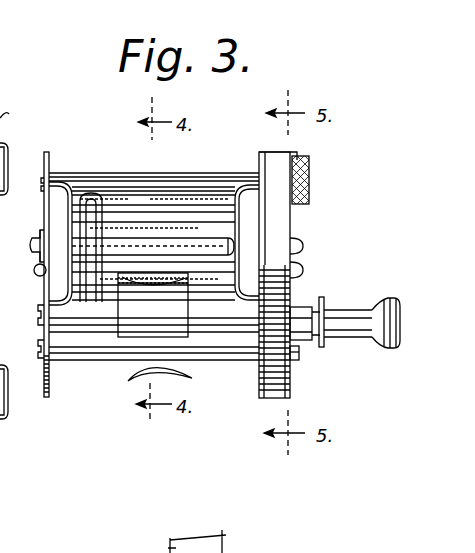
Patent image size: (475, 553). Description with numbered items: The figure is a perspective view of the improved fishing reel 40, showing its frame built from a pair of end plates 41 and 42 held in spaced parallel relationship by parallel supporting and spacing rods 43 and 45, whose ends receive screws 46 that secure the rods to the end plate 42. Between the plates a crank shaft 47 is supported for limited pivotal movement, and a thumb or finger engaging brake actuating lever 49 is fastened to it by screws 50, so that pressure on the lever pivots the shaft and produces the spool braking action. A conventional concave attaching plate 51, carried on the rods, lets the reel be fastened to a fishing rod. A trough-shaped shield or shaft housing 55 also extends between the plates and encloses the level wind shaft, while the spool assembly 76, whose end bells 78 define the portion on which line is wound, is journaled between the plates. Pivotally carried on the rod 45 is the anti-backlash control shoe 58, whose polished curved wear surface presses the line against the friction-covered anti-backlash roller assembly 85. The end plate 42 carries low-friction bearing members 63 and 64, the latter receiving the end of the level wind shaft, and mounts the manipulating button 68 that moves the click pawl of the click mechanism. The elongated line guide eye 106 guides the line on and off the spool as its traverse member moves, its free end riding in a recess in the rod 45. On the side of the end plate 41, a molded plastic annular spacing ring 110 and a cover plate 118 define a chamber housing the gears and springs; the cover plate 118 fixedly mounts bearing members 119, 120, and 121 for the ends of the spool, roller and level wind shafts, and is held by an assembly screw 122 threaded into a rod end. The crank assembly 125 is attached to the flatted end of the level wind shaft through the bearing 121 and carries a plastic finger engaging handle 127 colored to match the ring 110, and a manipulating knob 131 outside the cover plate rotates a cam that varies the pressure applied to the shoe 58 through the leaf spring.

The fishing reel 40 is at (112, 412).
The end plate 41 is at (259, 152).
The end plate 42 is at (88, 142).
The supporting and spacing rod 43 is at (78, 352).
The supporting and spacing rod 45 is at (194, 167).
The screw 46 is at (44, 182).
The crank shaft 47 is at (232, 320).
The brake actuating lever 49 is at (145, 282).
The screw 50 is at (178, 330).
The concave attaching plate 51 is at (180, 373).
The shaft housing 55 is at (186, 304).
The anti-backlash control shoe 58 is at (126, 190).
The bearing member 63 is at (34, 270).
The bearing member 64 is at (38, 312).
The manipulating button 68 is at (38, 252).
The spool assembly 76 is at (171, 246).
The end bell 78 is at (58, 203).
The anti-backlash roller assembly 85 is at (226, 277).
The line guide eye 106 is at (73, 200).
The annular spacing ring 110 is at (280, 218).
The cover plate 118 is at (352, 152).
The bearing member 119 is at (355, 236).
The bearing member 120 is at (357, 256).
The bearing member 121 is at (301, 313).
The assembly screw 122 is at (297, 362).
The crank assembly 125 is at (377, 302).
The finger engaging handle 127 is at (372, 340).
The manipulating knob 131 is at (310, 185).